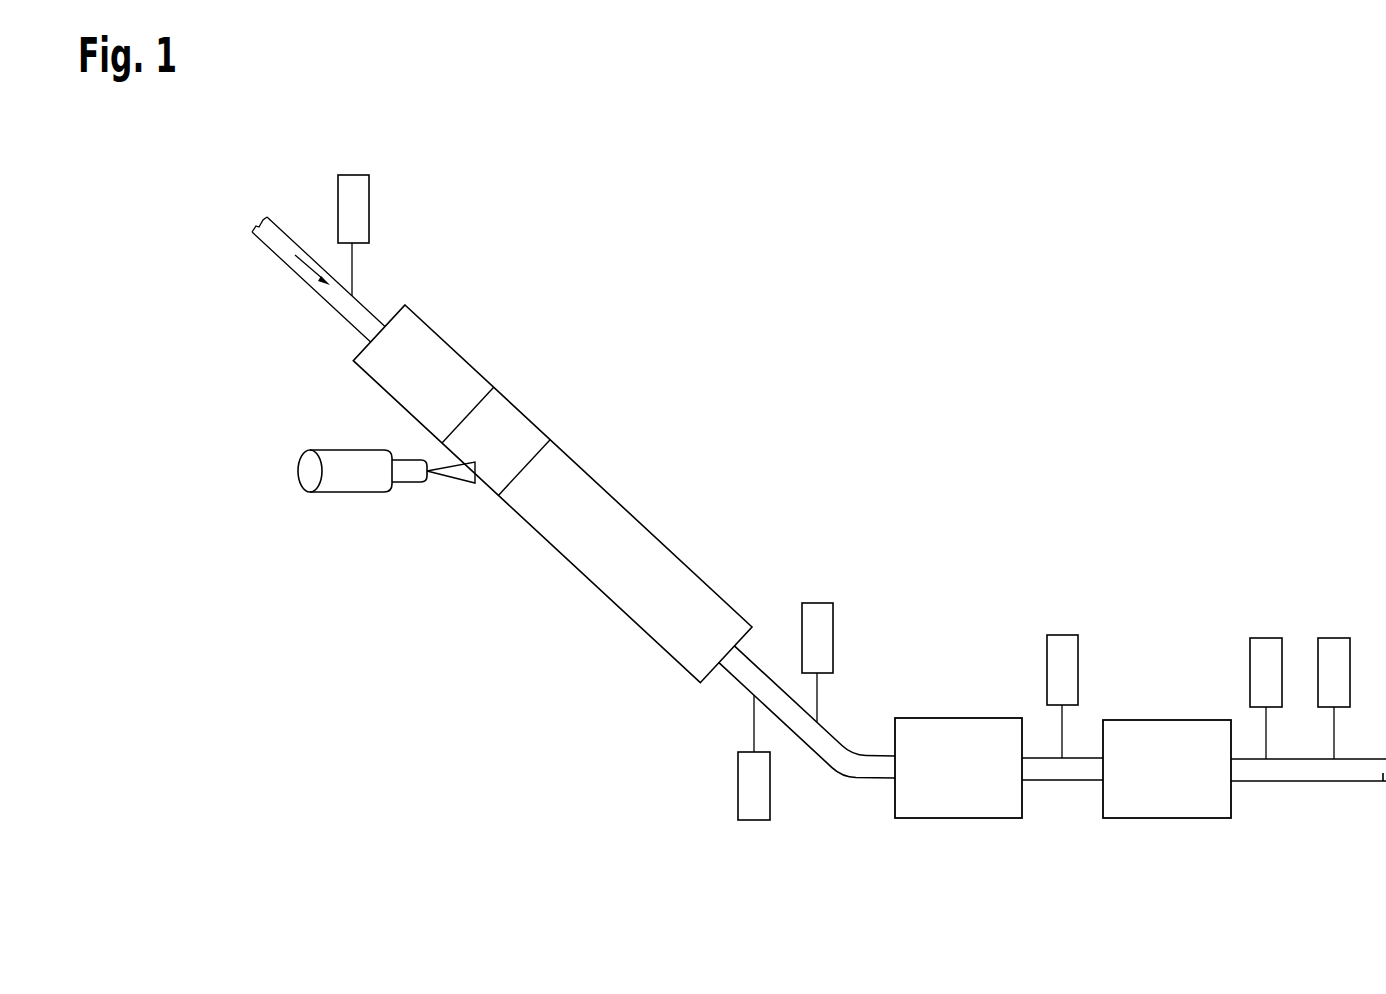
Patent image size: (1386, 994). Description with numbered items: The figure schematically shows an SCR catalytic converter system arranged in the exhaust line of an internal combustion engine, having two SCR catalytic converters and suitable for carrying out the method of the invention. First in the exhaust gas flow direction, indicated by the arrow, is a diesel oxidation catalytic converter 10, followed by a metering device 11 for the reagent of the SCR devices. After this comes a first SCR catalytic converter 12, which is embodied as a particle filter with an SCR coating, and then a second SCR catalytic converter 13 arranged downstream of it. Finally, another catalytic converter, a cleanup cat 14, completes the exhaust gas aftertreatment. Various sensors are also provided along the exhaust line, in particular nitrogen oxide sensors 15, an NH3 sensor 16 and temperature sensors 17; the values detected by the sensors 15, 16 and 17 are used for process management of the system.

The diesel oxidation catalytic converter 10 is at (457, 350).
The metering device 11 is at (350, 488).
The first SCR catalytic converter 12 is at (653, 537).
The second SCR catalytic converter 13 is at (958, 718).
The cleanup cat 14 is at (1168, 720).
The nitrogen oxide sensors 15 is at (369, 205).
The NH3 sensor 16 is at (754, 820).
The temperature sensors 17 is at (1062, 635).